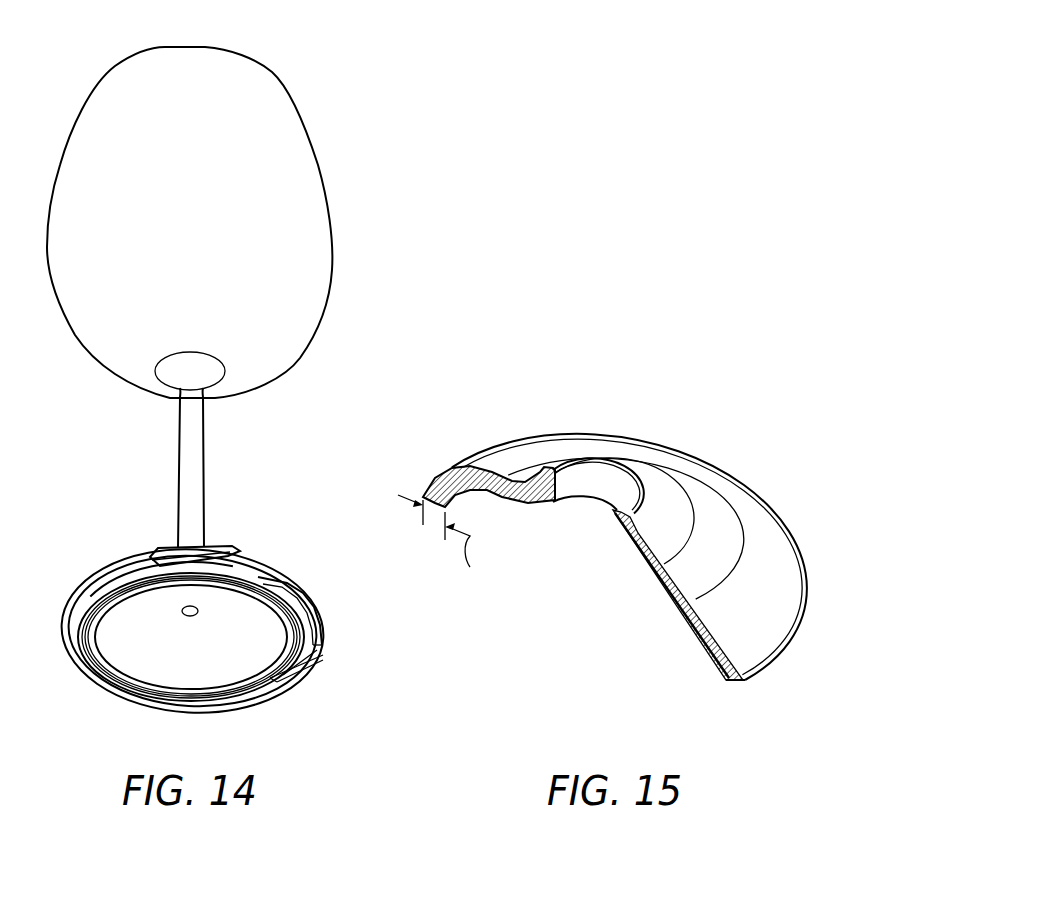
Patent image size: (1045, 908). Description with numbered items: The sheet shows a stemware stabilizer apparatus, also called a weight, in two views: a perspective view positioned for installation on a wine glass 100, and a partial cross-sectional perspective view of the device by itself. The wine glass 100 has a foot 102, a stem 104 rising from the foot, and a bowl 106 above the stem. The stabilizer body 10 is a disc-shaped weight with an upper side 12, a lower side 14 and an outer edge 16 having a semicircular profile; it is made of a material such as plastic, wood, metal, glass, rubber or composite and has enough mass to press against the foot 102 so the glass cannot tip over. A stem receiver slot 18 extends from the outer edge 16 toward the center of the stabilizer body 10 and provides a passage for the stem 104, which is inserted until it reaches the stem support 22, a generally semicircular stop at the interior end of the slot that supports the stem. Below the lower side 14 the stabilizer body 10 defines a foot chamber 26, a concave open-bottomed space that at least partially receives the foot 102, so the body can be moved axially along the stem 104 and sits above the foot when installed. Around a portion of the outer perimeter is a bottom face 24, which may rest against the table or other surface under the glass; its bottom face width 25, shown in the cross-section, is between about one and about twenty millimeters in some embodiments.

In FIG. 14, the stabilizer body 10 is at (180, 631).
In FIG. 15, the stabilizer body 10 is at (613, 559).
In FIG. 15, the upper side 12 is at (782, 558).
In FIG. 15, the lower side 14 is at (460, 495).
In FIG. 15, the outer edge 16 is at (790, 642).
In FIG. 15, the stem receiver slot 18 is at (588, 507).
In FIG. 15, the stem support 22 is at (595, 488).
In FIG. 14, the bottom face 24 is at (92, 672).
In FIG. 15, the bottom face 24 is at (732, 678).
In FIG. 15, the bottom face width 25 is at (439, 545).
In FIG. 15, the foot chamber 26 is at (682, 624).
In FIG. 14, the wine glass 100 is at (219, 297).
In FIG. 14, the foot 102 is at (250, 562).
In FIG. 14, the stem 104 is at (177, 467).
In FIG. 14, the bowl 106 is at (75, 343).